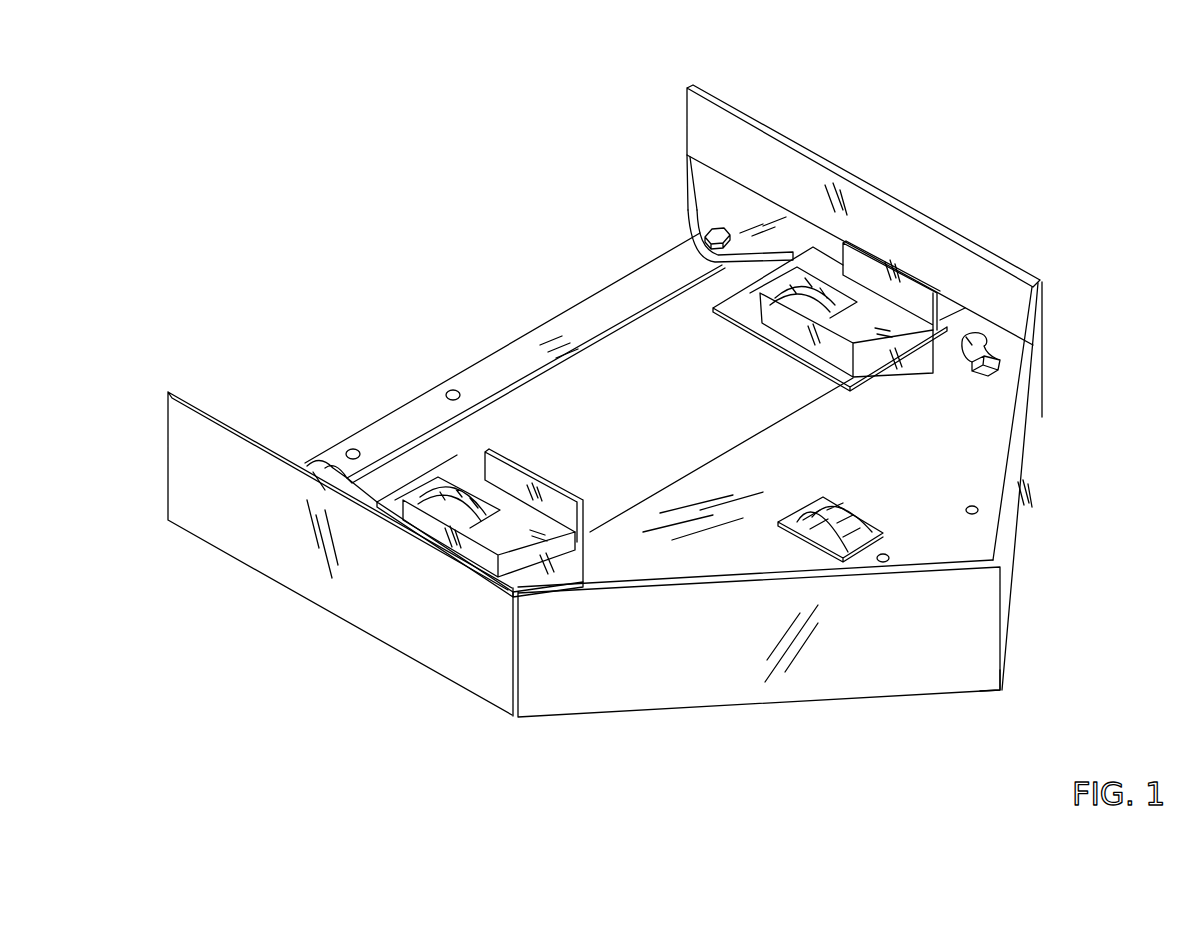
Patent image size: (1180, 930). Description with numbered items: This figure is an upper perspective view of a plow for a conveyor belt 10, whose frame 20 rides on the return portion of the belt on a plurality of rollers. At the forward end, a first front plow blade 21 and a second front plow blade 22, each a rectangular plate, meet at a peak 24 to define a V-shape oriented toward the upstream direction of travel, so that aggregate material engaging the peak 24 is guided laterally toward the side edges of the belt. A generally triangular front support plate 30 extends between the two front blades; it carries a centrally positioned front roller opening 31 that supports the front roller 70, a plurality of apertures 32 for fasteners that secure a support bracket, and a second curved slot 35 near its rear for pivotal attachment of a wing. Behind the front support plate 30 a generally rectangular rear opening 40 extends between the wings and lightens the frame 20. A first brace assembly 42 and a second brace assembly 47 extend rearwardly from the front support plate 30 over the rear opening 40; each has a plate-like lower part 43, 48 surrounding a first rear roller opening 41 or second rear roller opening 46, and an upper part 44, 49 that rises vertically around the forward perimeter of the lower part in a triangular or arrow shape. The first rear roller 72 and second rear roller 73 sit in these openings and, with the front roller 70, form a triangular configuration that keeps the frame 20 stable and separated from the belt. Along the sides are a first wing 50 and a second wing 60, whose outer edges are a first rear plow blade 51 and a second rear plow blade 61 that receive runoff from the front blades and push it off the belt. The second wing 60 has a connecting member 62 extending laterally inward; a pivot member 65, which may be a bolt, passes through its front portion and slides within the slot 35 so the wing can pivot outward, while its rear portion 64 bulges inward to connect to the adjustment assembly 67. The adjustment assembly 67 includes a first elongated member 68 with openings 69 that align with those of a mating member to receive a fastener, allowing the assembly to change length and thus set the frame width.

The plow for a conveyor belt 10 is at (345, 212).
The frame 20 is at (970, 168).
The first front plow blade 21 is at (733, 688).
The second front plow blade 22 is at (1012, 577).
The peak 24 is at (1000, 643).
The front support plate 30 is at (985, 428).
The front roller opening 31 is at (887, 526).
The apertures 32 is at (982, 506).
The second curved slot 35 is at (985, 336).
The rear opening 40 is at (600, 372).
The first rear roller opening 41 is at (425, 486).
The first brace assembly 42 is at (476, 452).
The lower part 43 is at (594, 538).
The upper part 44 is at (522, 490).
The second rear roller opening 46 is at (758, 274).
The second brace assembly 47 is at (722, 320).
The lower part 48 is at (822, 366).
The upper part 49 is at (838, 380).
The first wing 50 is at (372, 643).
The first rear plow blade 51 is at (322, 593).
The second wing 60 is at (995, 252).
The second rear plow blade 61 is at (777, 150).
The connecting member 62 is at (708, 210).
The rear portion 64 is at (706, 197).
The pivot member 65 is at (998, 360).
The adjustment assembly 67 is at (485, 350).
The first elongated member 68 is at (655, 265).
The openings 69 is at (442, 392).
The front roller 70 is at (830, 538).
The first rear roller 72 is at (422, 512).
The second rear roller 73 is at (760, 341).